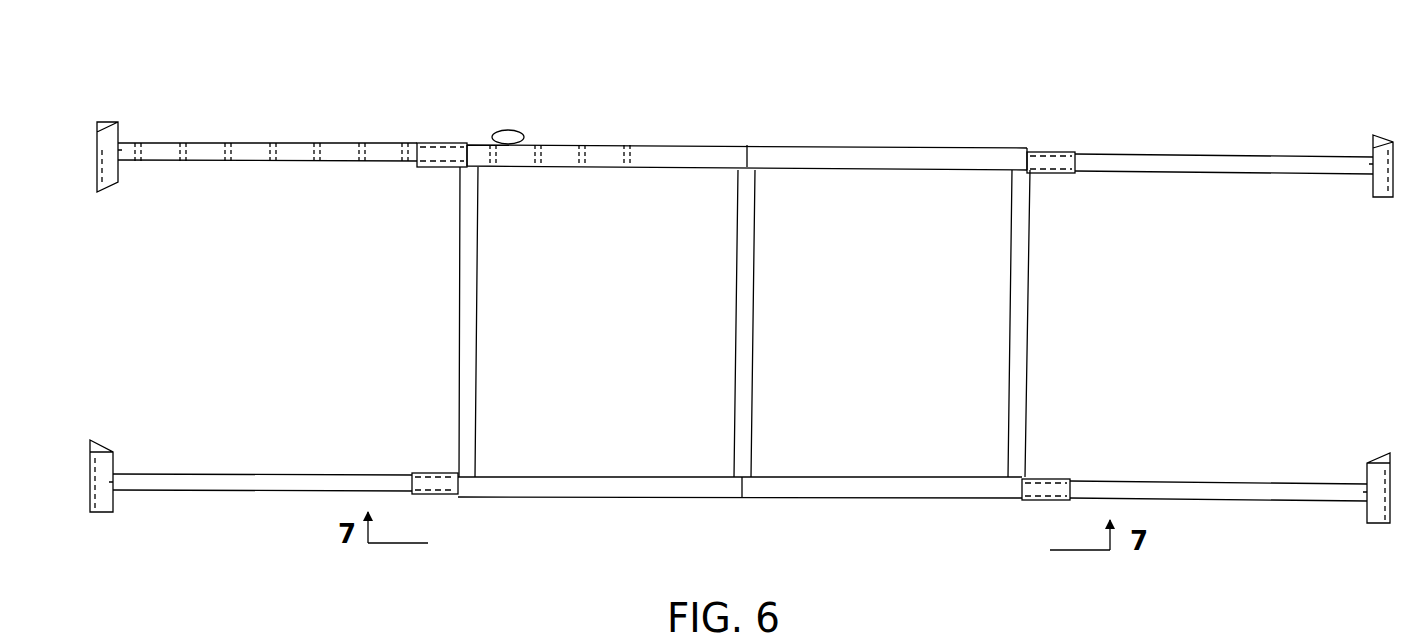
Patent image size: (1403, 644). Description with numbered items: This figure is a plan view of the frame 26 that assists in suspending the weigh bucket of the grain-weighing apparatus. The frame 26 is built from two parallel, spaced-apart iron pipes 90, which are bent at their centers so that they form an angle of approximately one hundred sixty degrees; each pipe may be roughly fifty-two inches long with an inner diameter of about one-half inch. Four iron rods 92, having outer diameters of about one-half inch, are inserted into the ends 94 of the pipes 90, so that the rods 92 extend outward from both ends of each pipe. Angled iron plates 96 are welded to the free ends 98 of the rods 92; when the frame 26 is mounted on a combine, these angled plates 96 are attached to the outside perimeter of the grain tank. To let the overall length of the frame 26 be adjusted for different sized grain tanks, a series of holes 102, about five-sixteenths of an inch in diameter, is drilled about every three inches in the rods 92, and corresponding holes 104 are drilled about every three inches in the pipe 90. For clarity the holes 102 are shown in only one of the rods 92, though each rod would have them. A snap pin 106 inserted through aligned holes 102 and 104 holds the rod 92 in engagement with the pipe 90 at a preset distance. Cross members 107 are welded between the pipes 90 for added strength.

The frame 26 is at (745, 134).
The iron pipes 90 is at (990, 148).
The iron rods 92 is at (373, 165).
The ends of the pipes 94 is at (443, 174).
The angled iron plates 96 is at (110, 124).
The free ends of the rods 98 is at (125, 176).
The holes 102 is at (238, 165).
The holes 104 is at (538, 168).
The snap pin 106 is at (495, 136).
The cross members 107 is at (508, 380).